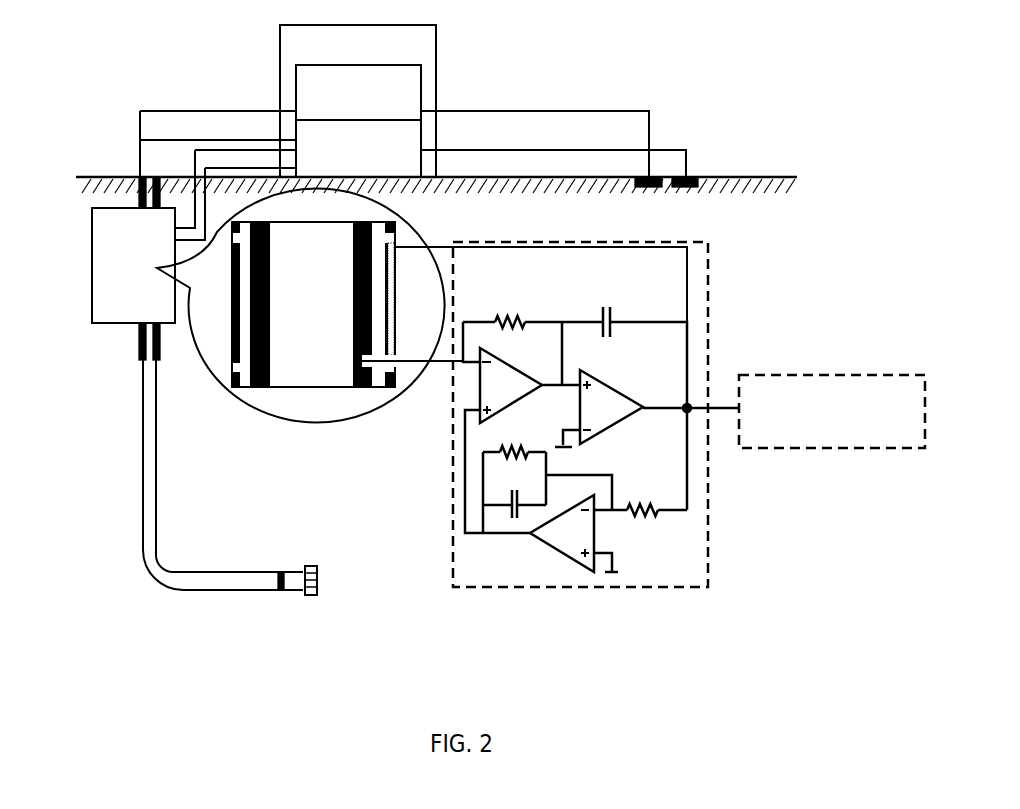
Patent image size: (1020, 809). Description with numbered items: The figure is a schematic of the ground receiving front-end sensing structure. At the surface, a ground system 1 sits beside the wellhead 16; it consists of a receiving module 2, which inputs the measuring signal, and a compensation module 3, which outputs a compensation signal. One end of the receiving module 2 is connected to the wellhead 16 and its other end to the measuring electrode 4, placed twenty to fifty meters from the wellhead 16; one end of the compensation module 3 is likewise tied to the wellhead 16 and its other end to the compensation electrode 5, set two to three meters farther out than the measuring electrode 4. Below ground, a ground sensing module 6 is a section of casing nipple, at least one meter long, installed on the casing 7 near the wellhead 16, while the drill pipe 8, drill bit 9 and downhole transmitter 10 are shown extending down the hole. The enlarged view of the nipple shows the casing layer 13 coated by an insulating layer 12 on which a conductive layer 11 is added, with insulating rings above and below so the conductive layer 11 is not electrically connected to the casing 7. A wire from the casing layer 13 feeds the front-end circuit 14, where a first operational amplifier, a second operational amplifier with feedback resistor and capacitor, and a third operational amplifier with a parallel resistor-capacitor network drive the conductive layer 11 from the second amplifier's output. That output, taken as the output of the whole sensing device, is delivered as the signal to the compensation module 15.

The ground system 1 is at (288, 132).
The receiving module 2 is at (358, 92).
The compensation module (ground system) 3 is at (358, 148).
The measuring electrode 4 is at (541, 149).
The compensation electrode 5 is at (615, 156).
The ground sensing unit 6 is at (133, 265).
The casing 7 is at (104, 270).
The drill pipe 8 is at (193, 475).
The drill bit 9 is at (356, 584).
The downhole transmitter 10 is at (262, 616).
The conductive layer 11 is at (396, 288).
The insulating layer 12 is at (247, 387).
The casing layer 13 is at (313, 304).
The front-end circuit 14 is at (596, 414).
The compensation module 15 is at (832, 411).
The wellhead 16 is at (410, 166).